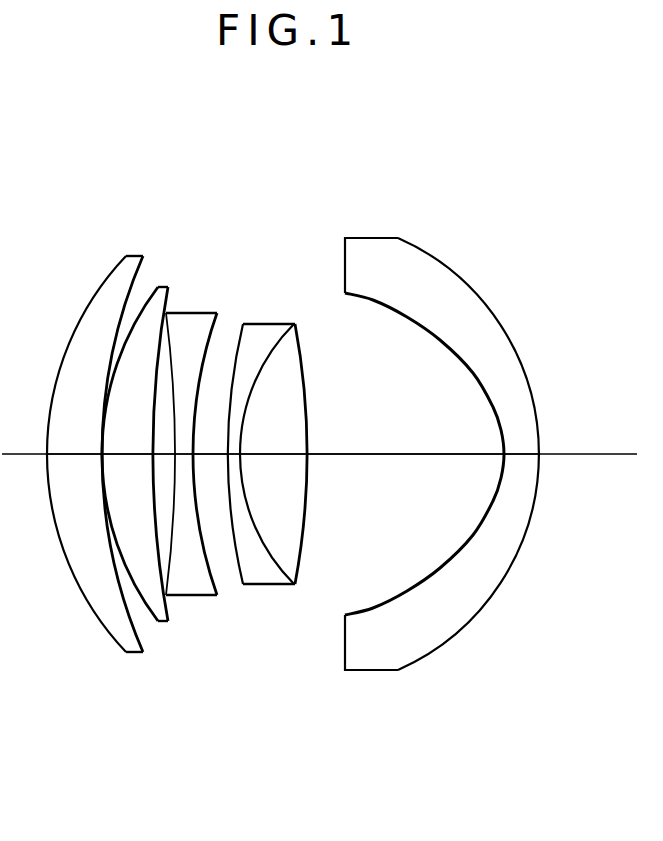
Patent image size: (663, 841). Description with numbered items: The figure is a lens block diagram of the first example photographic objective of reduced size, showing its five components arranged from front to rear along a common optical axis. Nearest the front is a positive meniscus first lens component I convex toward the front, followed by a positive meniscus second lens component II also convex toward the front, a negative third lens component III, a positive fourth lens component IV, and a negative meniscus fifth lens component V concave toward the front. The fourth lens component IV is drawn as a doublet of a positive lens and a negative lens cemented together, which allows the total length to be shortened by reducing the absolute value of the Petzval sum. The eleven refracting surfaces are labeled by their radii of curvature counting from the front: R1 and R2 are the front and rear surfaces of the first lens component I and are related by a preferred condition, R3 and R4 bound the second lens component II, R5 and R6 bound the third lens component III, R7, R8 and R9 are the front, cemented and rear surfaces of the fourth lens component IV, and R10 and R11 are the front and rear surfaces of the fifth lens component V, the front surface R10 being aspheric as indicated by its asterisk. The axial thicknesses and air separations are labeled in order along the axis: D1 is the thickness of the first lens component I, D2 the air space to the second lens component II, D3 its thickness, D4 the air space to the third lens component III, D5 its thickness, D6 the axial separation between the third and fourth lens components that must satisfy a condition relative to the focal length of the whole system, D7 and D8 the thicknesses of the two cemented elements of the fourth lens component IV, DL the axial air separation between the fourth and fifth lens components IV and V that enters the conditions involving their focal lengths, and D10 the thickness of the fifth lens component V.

The 1st lens component I is at (142, 191).
The 2nd lens component II is at (220, 191).
The 3rd lens component III is at (206, 427).
The 4th lens component IV is at (280, 191).
The 5th lens component V is at (330, 191).
The radius of curvature of the front surface of the 1st lens component R1 is at (99, 620).
The radius of curvature of the rear surface of the 1st lens component R2 is at (128, 618).
The radius of curvature of the third surface R3 is at (147, 607).
The radius of curvature of the fourth surface R4 is at (165, 582).
The radius of curvature of the fifth surface R5 is at (172, 560).
The radius of curvature of the sixth surface R6 is at (204, 560).
The radius of curvature of the seventh surface R7 is at (236, 560).
The radius of curvature of the eighth surface R8 is at (265, 562).
The radius of curvature of the ninth surface R9 is at (304, 560).
The radius of curvature of the tenth surface R10 is at (381, 607).
The radius of curvature of the eleventh surface R11 is at (455, 643).
The axial thickness between the first and second surfaces D1 is at (68, 457).
The axial air separation between the second and third surfaces D2 is at (98, 457).
The axial thickness between the third and fourth surfaces D3 is at (122, 457).
The axial air separation between the fourth and fifth surfaces D4 is at (163, 457).
The axial thickness between the fifth and sixth surfaces D5 is at (183, 457).
The axial separation between the 3rd and 4th lens components D6 is at (210, 457).
The axial thickness between the seventh and eighth surfaces D7 is at (242, 457).
The axial thickness between the eighth and ninth surfaces D8 is at (270, 457).
The axial air separation between the 4th and 5th lens components DL is at (383, 457).
The axial thickness between the tenth and eleventh surfaces D10 is at (517, 457).